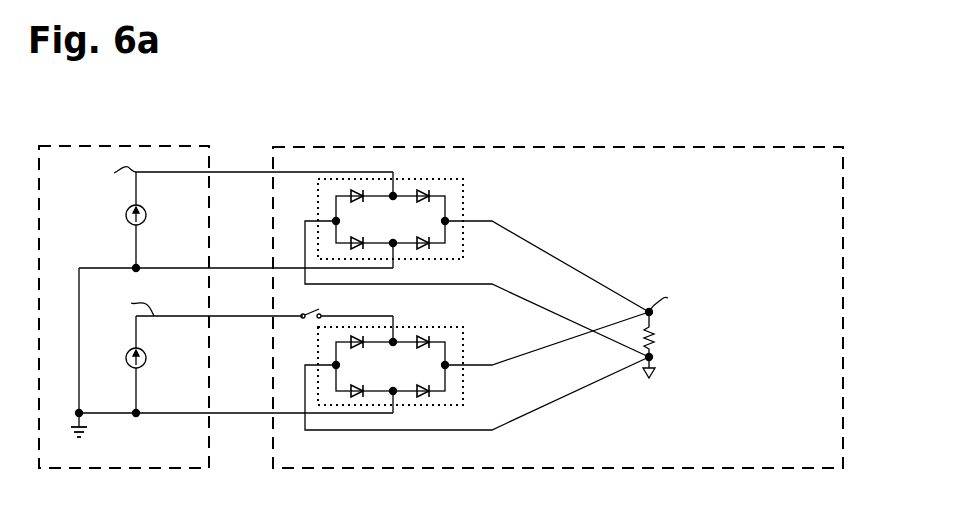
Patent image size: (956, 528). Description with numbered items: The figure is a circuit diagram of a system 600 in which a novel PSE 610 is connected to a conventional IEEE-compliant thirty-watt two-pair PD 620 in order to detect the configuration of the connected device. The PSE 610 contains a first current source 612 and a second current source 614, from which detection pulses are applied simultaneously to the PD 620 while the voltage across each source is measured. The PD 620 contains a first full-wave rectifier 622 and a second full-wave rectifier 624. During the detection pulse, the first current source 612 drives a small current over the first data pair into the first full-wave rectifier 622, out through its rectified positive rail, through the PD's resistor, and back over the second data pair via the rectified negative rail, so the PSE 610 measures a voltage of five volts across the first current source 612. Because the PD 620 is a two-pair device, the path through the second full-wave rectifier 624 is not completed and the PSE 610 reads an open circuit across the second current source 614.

The system 600 is at (645, 140).
The PSE 610 is at (206, 147).
The first current source 612 is at (126, 212).
The second current source 614 is at (148, 347).
The PD 620 is at (435, 147).
The first full-wave rectifier 622 is at (463, 181).
The second full-wave rectifier 624 is at (463, 328).